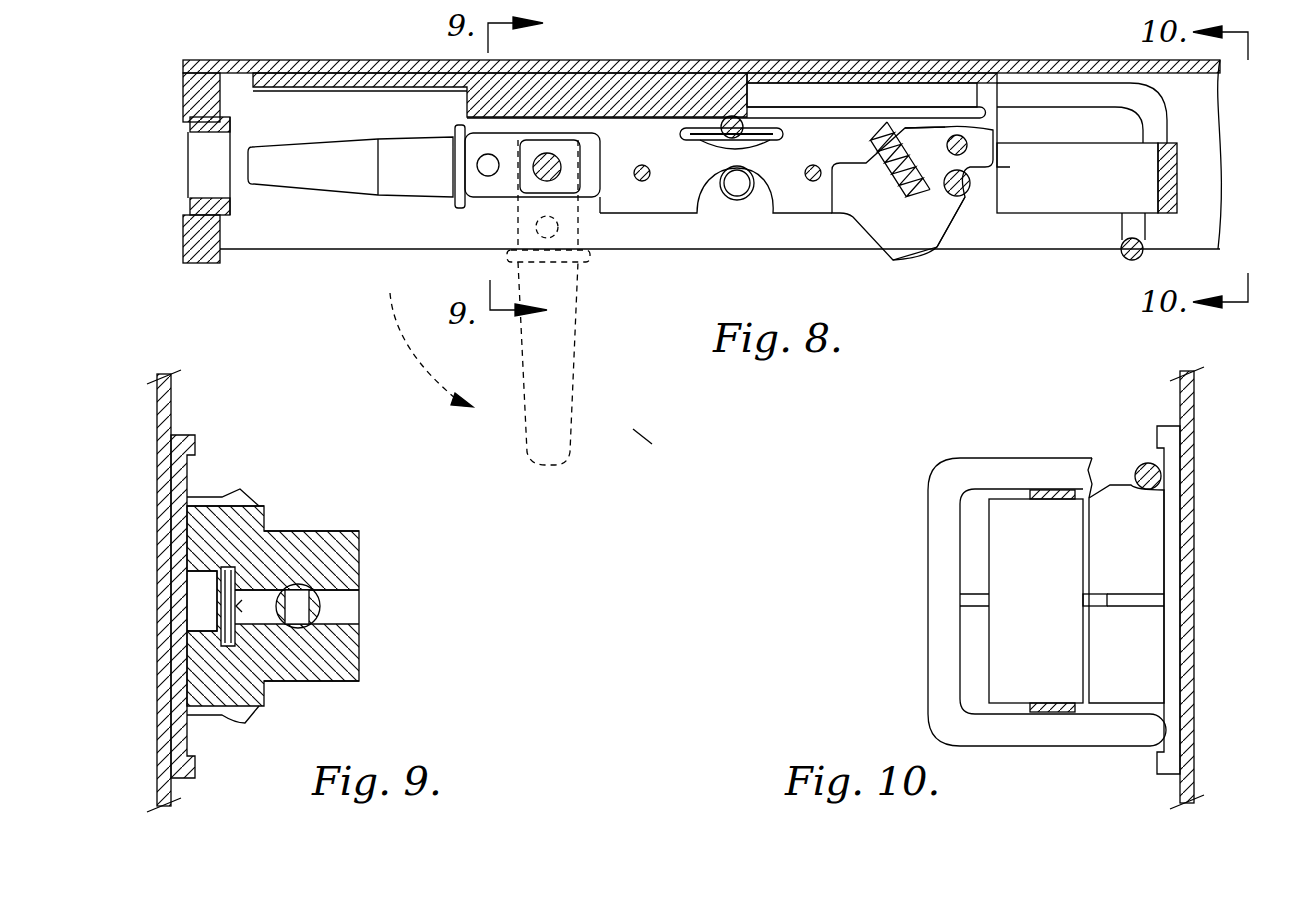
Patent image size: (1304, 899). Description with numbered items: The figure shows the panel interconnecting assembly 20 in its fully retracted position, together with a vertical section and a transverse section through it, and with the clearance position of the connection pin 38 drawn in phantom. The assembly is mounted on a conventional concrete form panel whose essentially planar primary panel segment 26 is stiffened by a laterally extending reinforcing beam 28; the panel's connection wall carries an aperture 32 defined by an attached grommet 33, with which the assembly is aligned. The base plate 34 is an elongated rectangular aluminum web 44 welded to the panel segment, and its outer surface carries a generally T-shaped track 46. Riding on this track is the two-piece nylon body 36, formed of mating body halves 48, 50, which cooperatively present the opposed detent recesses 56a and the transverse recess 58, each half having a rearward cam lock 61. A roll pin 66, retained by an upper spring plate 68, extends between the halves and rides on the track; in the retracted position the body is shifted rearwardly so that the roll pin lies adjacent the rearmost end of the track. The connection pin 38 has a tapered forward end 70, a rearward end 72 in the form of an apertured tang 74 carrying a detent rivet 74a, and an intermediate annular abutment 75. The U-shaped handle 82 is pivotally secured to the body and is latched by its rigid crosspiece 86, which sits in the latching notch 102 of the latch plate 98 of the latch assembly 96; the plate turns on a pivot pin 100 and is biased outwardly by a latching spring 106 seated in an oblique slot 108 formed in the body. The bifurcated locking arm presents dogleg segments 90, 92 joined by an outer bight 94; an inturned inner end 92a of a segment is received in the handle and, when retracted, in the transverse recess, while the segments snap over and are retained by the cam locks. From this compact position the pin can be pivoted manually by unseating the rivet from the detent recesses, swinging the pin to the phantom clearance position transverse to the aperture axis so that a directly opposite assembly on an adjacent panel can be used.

In FIG. 8, the panel interconnecting assembly 20 is at (644, 437).
In FIG. 8, the primary panel segment 26 is at (1035, 60).
In FIG. 9, the primary panel segment 26 is at (165, 409).
In FIG. 10, the primary panel segment 26 is at (1192, 692).
In FIG. 8, the reinforcing beam 28 is at (1213, 207).
In FIG. 8, the aperture 32 is at (190, 200).
In FIG. 8, the grommet 33 is at (190, 133).
In FIG. 9, the base plate 34 is at (242, 437).
In FIG. 9, the shiftable nylon body 36 is at (372, 528).
In FIG. 8, the connection pin 38 is at (322, 124).
In FIG. 8, the web 44 is at (865, 75).
In FIG. 9, the web 44 is at (185, 480).
In FIG. 10, the web 44 is at (1172, 596).
In FIG. 8, the track 46 is at (595, 80).
In FIG. 9, the track 46 is at (206, 607).
In FIG. 9, the body half 48 is at (330, 531).
In FIG. 9, the body half 50 is at (336, 682).
In FIG. 9, the detent recess 56a is at (325, 590).
In FIG. 8, the transverse recess 58 is at (756, 205).
In FIG. 9, the cam lock 61 is at (247, 501).
In FIG. 10, the cam lock 61 is at (1120, 488).
In FIG. 8, the roll pin 66 is at (731, 115).
In FIG. 8, the spring plate 68 is at (718, 142).
In FIG. 8, the tapered forward end 70 is at (258, 185).
In FIG. 9, the rearward end 72 is at (312, 606).
In FIG. 8, the tang 74 is at (498, 183).
In FIG. 8, the detent rivet 74a is at (486, 156).
In FIG. 9, the detent rivet 74a is at (300, 625).
In FIG. 8, the annular abutment 75 is at (458, 180).
In FIG. 8, the handle 82 is at (1170, 164).
In FIG. 10, the handle 82 is at (1052, 510).
In FIG. 8, the crosspiece 86 is at (968, 183).
In FIG. 10, the dogleg segment 90 is at (1160, 476).
In FIG. 10, the dogleg segment 92 is at (1162, 736).
In FIG. 8, the inturned inner end 92a is at (736, 192).
In FIG. 8, the outer bight 94 is at (1122, 258).
In FIG. 10, the outer bight 94 is at (938, 586).
In FIG. 8, the latch assembly 96 is at (901, 298).
In FIG. 8, the latch plate 98 is at (905, 252).
In FIG. 10, the latch plate 98 is at (1100, 594).
In FIG. 8, the pivot pin 100 is at (968, 146).
In FIG. 8, the latching notch 102 is at (965, 197).
In FIG. 8, the latching spring 106 is at (877, 140).
In FIG. 8, the oblique slot 108 is at (920, 140).